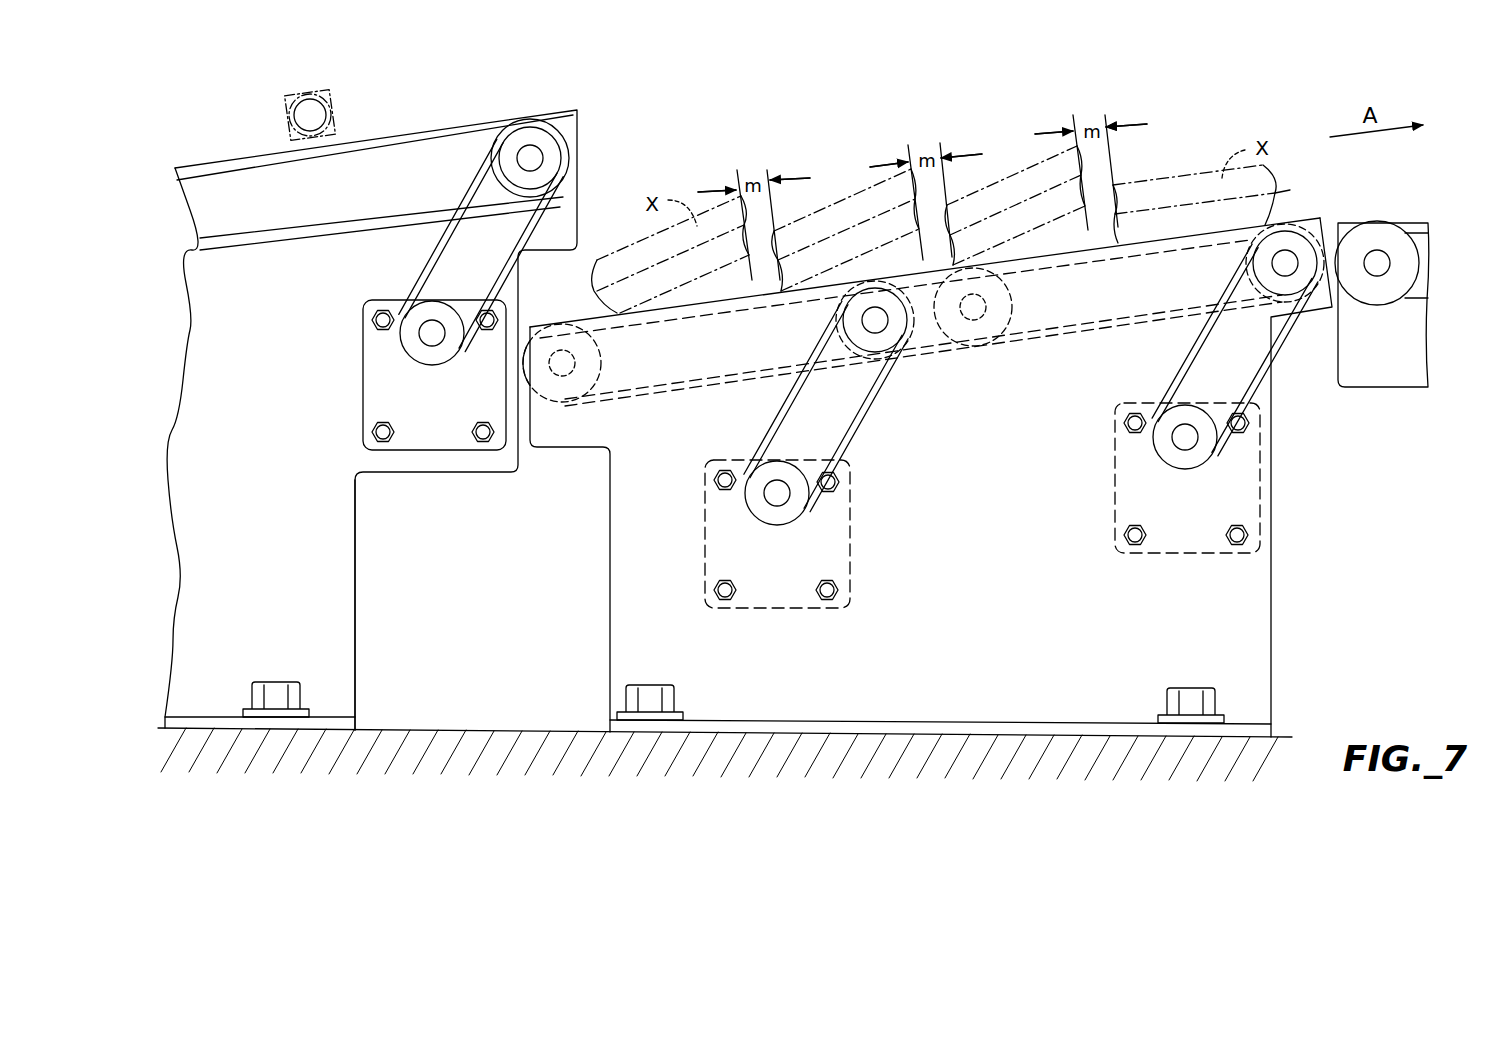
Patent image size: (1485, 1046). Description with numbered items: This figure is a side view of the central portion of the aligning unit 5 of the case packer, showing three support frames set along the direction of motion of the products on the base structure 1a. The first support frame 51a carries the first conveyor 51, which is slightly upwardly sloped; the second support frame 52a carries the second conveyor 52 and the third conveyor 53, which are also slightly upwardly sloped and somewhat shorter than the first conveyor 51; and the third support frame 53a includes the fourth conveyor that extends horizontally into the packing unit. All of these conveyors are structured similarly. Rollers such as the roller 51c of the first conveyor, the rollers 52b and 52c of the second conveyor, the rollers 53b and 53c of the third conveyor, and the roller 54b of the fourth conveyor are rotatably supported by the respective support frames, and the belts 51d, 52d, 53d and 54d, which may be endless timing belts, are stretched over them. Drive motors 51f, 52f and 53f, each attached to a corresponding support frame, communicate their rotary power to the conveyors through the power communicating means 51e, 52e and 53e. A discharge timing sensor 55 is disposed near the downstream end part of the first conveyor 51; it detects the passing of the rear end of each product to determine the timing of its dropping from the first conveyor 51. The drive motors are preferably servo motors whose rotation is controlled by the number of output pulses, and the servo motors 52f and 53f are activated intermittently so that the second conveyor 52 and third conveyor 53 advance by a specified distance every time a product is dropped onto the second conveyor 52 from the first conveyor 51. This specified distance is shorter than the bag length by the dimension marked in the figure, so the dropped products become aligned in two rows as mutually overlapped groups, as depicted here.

The base structure 1a is at (1283, 736).
The aligning unit 5 is at (861, 128).
The first conveyor 51 is at (452, 126).
The first support frame 51a is at (340, 583).
The roller 51c is at (566, 133).
The belt 51d is at (265, 240).
The power communicating means 51e is at (435, 242).
The drive motor 51f is at (363, 380).
The second conveyor 52 is at (868, 493).
The second support frame 52a is at (610, 565).
The roller 52b is at (522, 365).
The roller 52c is at (841, 305).
The belt 52d is at (762, 374).
The power communicating means 52e is at (852, 435).
The drive motor 52f is at (748, 607).
The third conveyor 53 is at (1055, 380).
The third support frame 53a is at (1395, 377).
The roller 53b is at (966, 346).
The roller 53c is at (1248, 254).
The belt 53d is at (1172, 322).
The power communicating means 53e is at (1262, 381).
The drive motor 53f is at (1162, 548).
The roller 54b is at (1380, 232).
The belt 54d is at (1422, 225).
The discharge timing sensor 55 is at (303, 94).